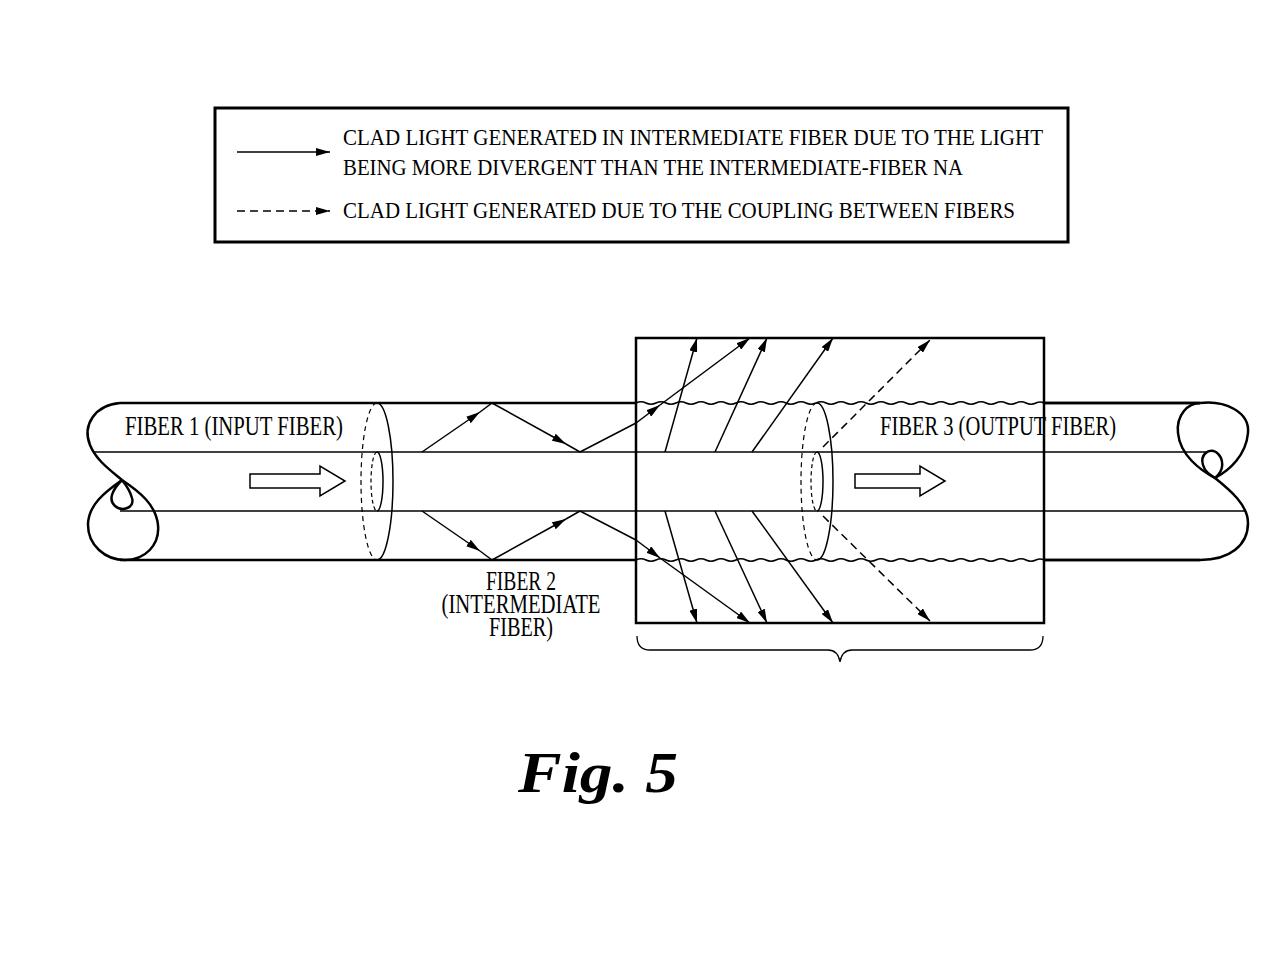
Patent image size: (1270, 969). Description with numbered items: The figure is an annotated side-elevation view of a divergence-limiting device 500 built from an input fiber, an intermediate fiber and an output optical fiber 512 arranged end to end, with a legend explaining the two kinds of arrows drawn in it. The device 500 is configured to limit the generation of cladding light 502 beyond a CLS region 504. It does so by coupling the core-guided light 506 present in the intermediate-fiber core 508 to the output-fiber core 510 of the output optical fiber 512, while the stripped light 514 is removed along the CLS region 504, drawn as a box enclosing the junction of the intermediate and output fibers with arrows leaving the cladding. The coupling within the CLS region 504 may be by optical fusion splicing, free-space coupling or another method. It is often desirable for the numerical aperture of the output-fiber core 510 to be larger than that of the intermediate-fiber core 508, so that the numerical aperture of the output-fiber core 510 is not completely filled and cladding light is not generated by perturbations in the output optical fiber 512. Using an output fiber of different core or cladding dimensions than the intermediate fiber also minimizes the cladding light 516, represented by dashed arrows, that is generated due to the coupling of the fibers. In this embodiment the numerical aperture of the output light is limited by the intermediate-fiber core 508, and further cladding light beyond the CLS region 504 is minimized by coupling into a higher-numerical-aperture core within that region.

The divergence-limiting device 500 is at (1150, 98).
The cladding light 502 is at (529, 421).
The CLS region 504 is at (828, 721).
The core-guided light 506 is at (459, 484).
The intermediate-fiber core 508 is at (413, 477).
The output-fiber core 510 is at (1135, 468).
The output optical fiber 512 is at (1157, 423).
The stripped light 514 is at (685, 374).
The cladding light generated due to coupling of fibers 516 is at (898, 373).